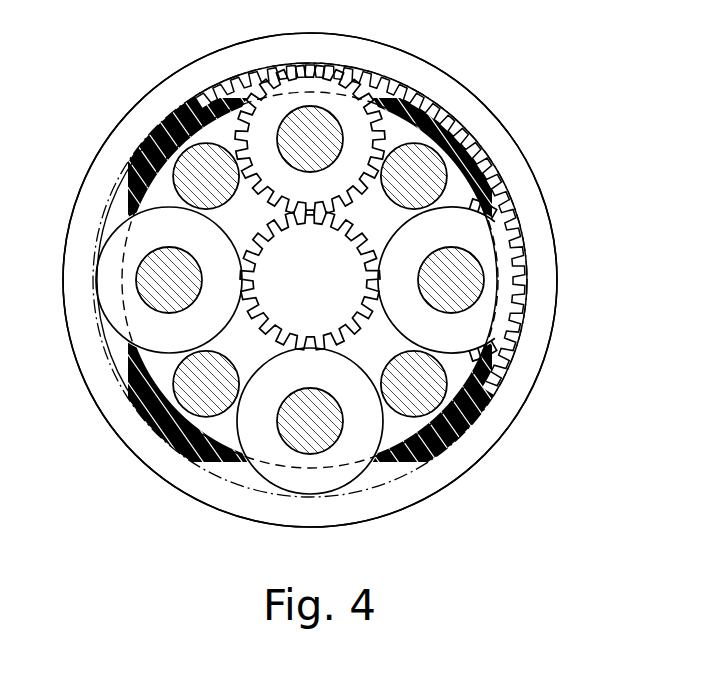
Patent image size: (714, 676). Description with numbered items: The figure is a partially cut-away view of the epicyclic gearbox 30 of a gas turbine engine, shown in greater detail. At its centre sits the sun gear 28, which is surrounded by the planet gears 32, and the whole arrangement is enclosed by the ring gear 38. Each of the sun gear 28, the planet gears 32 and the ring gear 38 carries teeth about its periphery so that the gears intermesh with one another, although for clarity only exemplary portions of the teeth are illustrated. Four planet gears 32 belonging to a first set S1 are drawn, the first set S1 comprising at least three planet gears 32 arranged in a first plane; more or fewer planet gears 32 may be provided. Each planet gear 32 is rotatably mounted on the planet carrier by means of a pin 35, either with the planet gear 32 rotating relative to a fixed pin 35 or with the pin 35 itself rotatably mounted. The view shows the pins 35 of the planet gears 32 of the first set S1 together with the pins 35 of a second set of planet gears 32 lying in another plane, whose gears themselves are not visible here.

The sun gear 28 is at (324, 294).
The epicyclic gearbox 30 is at (124, 108).
The planet gear 32 is at (457, 243).
The pin 35 is at (455, 272).
The ring gear 38 is at (557, 233).
The first set of planet gears S1 is at (122, 353).